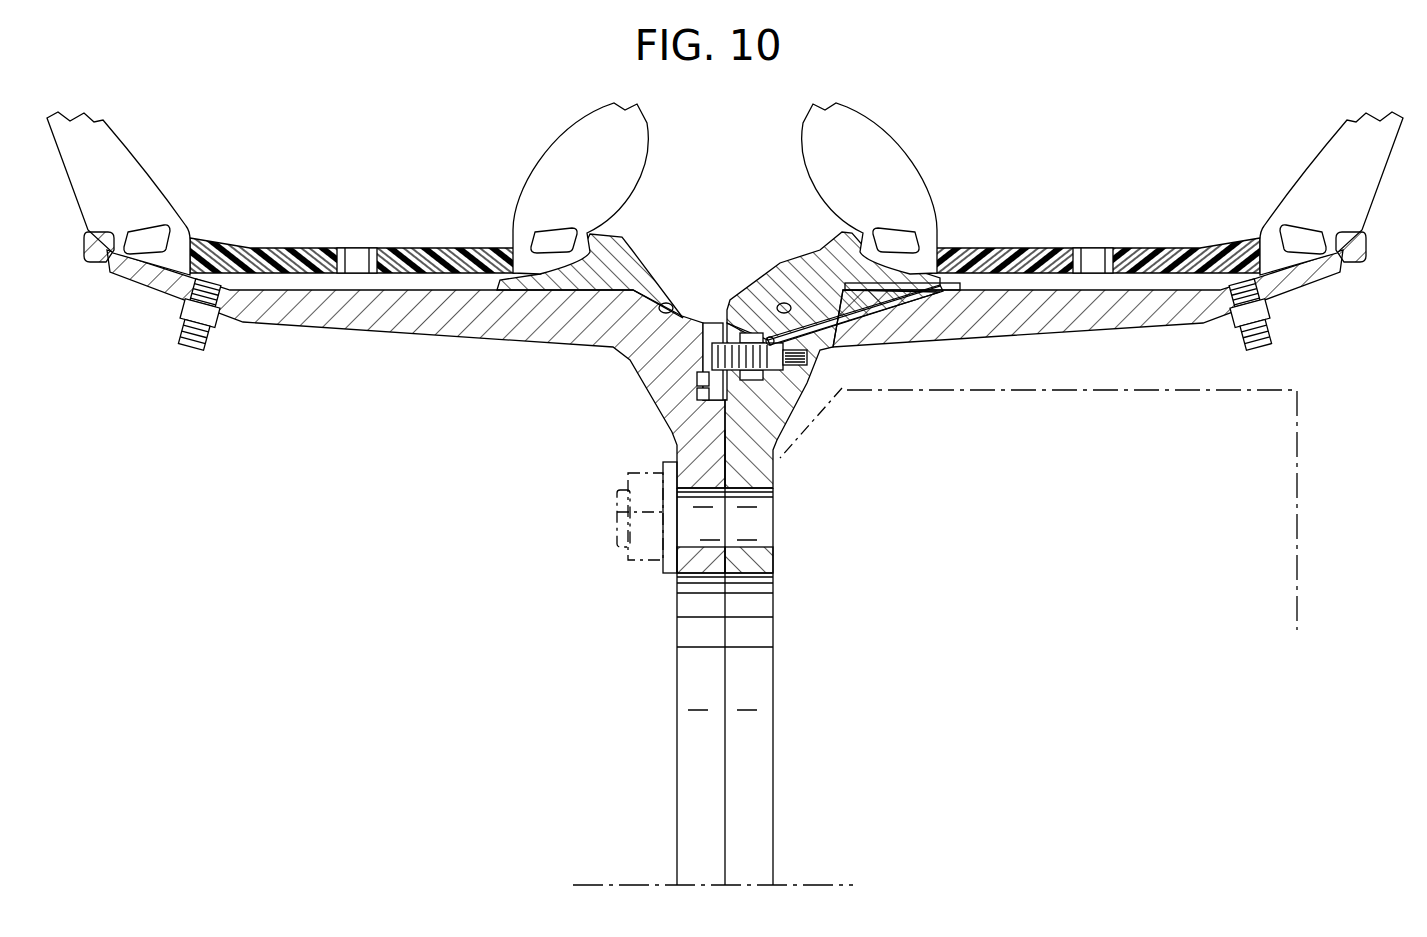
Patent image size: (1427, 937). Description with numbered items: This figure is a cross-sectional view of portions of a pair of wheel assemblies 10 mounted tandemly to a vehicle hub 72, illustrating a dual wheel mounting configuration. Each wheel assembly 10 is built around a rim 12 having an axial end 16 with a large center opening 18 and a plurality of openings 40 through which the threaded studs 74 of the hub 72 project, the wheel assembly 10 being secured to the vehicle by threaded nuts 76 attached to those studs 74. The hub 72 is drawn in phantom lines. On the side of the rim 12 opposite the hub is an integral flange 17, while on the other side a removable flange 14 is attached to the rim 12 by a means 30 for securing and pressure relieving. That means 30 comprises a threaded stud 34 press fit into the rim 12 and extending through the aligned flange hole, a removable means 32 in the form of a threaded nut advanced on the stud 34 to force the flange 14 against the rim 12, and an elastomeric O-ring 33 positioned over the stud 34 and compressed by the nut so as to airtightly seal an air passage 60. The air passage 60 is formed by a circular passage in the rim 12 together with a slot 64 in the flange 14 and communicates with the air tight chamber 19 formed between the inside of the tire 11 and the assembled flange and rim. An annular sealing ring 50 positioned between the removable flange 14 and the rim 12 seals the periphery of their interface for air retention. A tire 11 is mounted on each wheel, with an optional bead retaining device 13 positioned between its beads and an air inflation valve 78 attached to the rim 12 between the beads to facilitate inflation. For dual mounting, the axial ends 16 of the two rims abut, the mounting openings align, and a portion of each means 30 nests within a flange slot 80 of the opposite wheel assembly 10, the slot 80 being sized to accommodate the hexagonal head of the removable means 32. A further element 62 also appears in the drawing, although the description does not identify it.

The wheel assembly 10 is at (521, 376).
The tire 11 is at (630, 156).
The rim 12 is at (383, 333).
The bead retaining device 13 is at (289, 250).
The removable flange 14 is at (651, 256).
The axial end 16 is at (690, 453).
The integral flange 17 is at (97, 253).
The center opening 18 is at (750, 578).
The air tight chamber 19 is at (212, 215).
The means for securing and pressure relieving 30 is at (699, 390).
The removable means for applying an axial force 32 is at (700, 373).
The O-ring 33 is at (824, 423).
The threaded stud 34 is at (812, 393).
The openings 40 is at (750, 543).
The annular sealing ring 50 is at (670, 304).
The air passage 60 is at (830, 320).
The link pin 62 is at (772, 337).
The slot 64 is at (930, 286).
The hub 72 is at (1283, 475).
The threaded studs 74 is at (617, 527).
The threaded nuts 76 is at (640, 555).
The air inflation valve 78 is at (202, 335).
The slot 80 is at (712, 327).